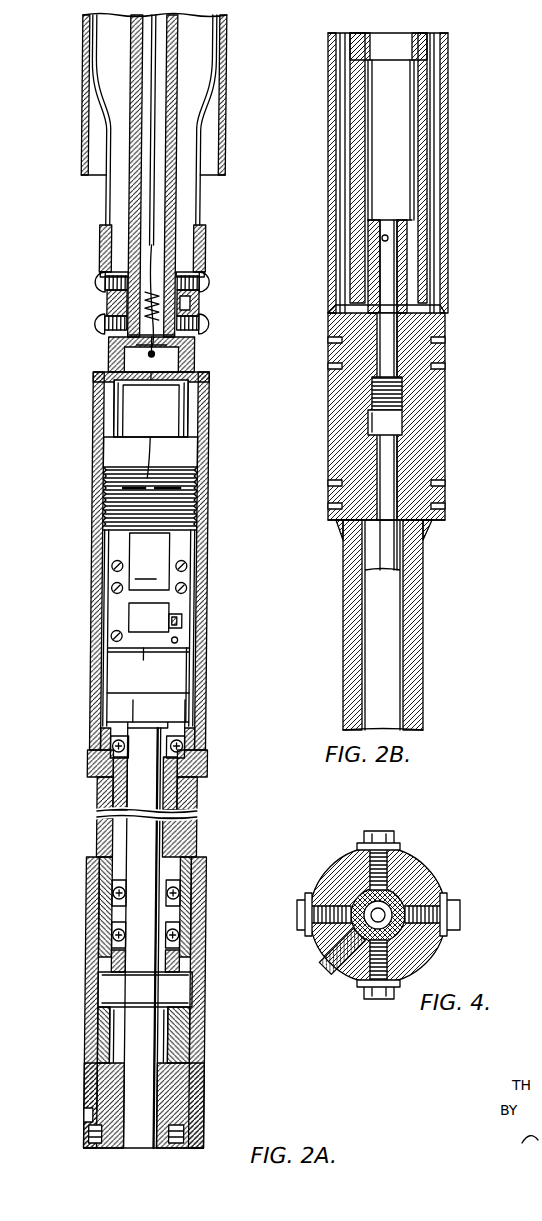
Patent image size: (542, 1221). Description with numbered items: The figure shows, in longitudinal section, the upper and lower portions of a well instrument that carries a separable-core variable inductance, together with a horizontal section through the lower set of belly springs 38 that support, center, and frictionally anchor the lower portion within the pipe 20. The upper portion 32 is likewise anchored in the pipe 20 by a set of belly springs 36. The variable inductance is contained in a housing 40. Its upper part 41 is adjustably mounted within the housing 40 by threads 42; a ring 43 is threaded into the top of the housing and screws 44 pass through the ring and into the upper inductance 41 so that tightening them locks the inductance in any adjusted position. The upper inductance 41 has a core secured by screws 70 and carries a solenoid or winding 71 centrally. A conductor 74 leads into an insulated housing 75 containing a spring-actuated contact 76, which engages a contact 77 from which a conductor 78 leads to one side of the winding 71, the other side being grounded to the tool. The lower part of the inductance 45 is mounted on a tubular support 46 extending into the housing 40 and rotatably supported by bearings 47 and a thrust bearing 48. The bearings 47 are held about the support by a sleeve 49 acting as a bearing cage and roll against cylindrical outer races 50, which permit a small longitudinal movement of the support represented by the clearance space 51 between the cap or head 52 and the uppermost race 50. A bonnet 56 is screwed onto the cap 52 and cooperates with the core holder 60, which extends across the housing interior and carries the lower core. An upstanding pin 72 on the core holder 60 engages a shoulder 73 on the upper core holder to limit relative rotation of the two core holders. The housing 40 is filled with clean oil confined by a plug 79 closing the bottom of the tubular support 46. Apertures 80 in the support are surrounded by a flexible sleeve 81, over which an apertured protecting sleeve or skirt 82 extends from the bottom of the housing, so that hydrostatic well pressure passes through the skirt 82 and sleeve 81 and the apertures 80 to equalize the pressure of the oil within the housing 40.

In FIG. 2A, the pipe 20 is at (223, 130).
In FIG. 2A, the belly springs 36 is at (109, 143).
In FIG. 2A, the conductor 74 is at (155, 210).
In FIG. 2A, the spring-actuated contact 76 is at (138, 305).
In FIG. 2A, the insulated housing 75 is at (195, 305).
In FIG. 2A, the contact 77 is at (143, 345).
In FIG. 2A, the conductor 78 is at (129, 450).
In FIG. 2A, the ring 43 is at (195, 472).
In FIG. 2A, the threads 42 is at (110, 472).
In FIG. 2A, the screws 44 is at (130, 490).
In FIG. 2A, the upper part of the variable inductance 41 is at (107, 548).
In FIG. 2A, the upper portion 32 is at (216, 555).
In FIG. 2A, the screws 70 is at (118, 588).
In FIG. 2A, the solenoid or winding 71 is at (149, 561).
In FIG. 2A, the lower part of the variable inductance 45 is at (108, 627).
In FIG. 2A, the upstanding pin 72 is at (140, 622).
In FIG. 2A, the shoulder 73 is at (186, 620).
In FIG. 2A, the bonnet 56 is at (119, 680).
In FIG. 2A, the core holder 60 is at (157, 645).
In FIG. 2A, the housing 40 is at (212, 682).
In FIG. 2A, the cap or head 52 is at (182, 712).
In FIG. 2A, the clearance space 51 is at (195, 726).
In FIG. 2A, the bearings 47 is at (119, 748).
In FIG. 2A, the outer races 50 is at (199, 747).
In FIG. 2A, the sleeve 49 is at (180, 793).
In FIG. 2A, the tubular support 46 is at (143, 840).
In FIG. 2B, the tubular support 46 is at (380, 183).
In FIG. 2A, the thrust bearing 48 is at (118, 972).
In FIG. 2A, the flexible sleeve 81 is at (211, 1135).
In FIG. 2B, the flexible sleeve 81 is at (428, 120).
In FIG. 2A, the protecting sleeve or skirt 82 is at (103, 1133).
In FIG. 2B, the protecting sleeve or skirt 82 is at (447, 147).
In FIG. 2B, the apertures 80 is at (385, 245).
In FIG. 2B, the plug 79 is at (385, 423).
In FIG. 4, the belly springs 38 is at (450, 900).